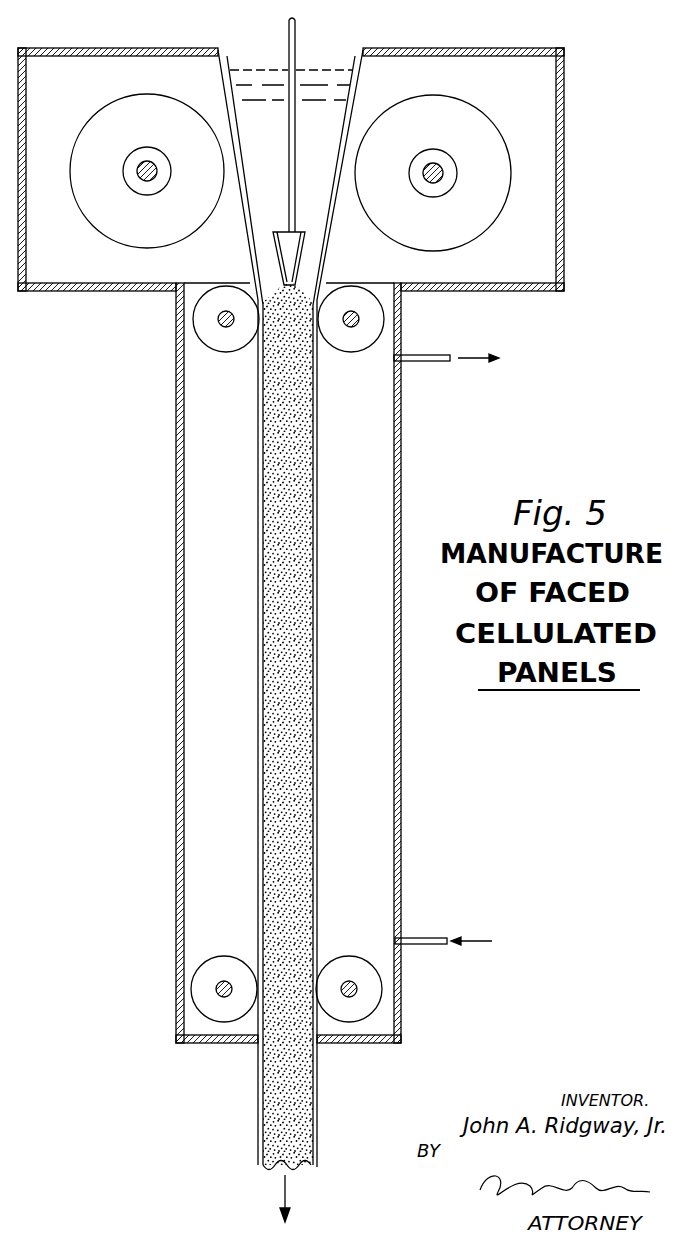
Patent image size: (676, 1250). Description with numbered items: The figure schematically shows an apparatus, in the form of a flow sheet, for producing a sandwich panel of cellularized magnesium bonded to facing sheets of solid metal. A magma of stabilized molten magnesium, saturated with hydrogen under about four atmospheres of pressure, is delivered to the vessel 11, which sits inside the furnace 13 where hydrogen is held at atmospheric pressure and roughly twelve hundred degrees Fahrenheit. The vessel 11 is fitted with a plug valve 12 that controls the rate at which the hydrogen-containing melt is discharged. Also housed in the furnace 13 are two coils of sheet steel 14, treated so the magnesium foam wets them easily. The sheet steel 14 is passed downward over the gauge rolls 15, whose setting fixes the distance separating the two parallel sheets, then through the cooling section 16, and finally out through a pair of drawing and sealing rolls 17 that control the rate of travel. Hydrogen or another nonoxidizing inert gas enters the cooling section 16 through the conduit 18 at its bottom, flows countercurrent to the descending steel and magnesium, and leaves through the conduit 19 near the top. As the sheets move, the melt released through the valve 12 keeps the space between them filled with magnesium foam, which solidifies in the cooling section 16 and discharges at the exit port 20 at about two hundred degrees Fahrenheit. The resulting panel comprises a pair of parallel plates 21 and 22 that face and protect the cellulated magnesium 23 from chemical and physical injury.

The vessel 11 is at (250, 70).
The plug valve 12 is at (286, 249).
The furnace 13 is at (562, 138).
The sheet steel 14 is at (338, 238).
The gauge rolls 15 is at (386, 313).
The cooling section 16 is at (402, 737).
The drawing and sealing rolls 17 is at (192, 975).
The conduit 18 is at (428, 935).
The conduit 19 is at (432, 355).
The exit port 20 is at (319, 1046).
The plate 21 is at (318, 1126).
The plate 22 is at (256, 1125).
The cellulated magnesium 23 is at (282, 1074).